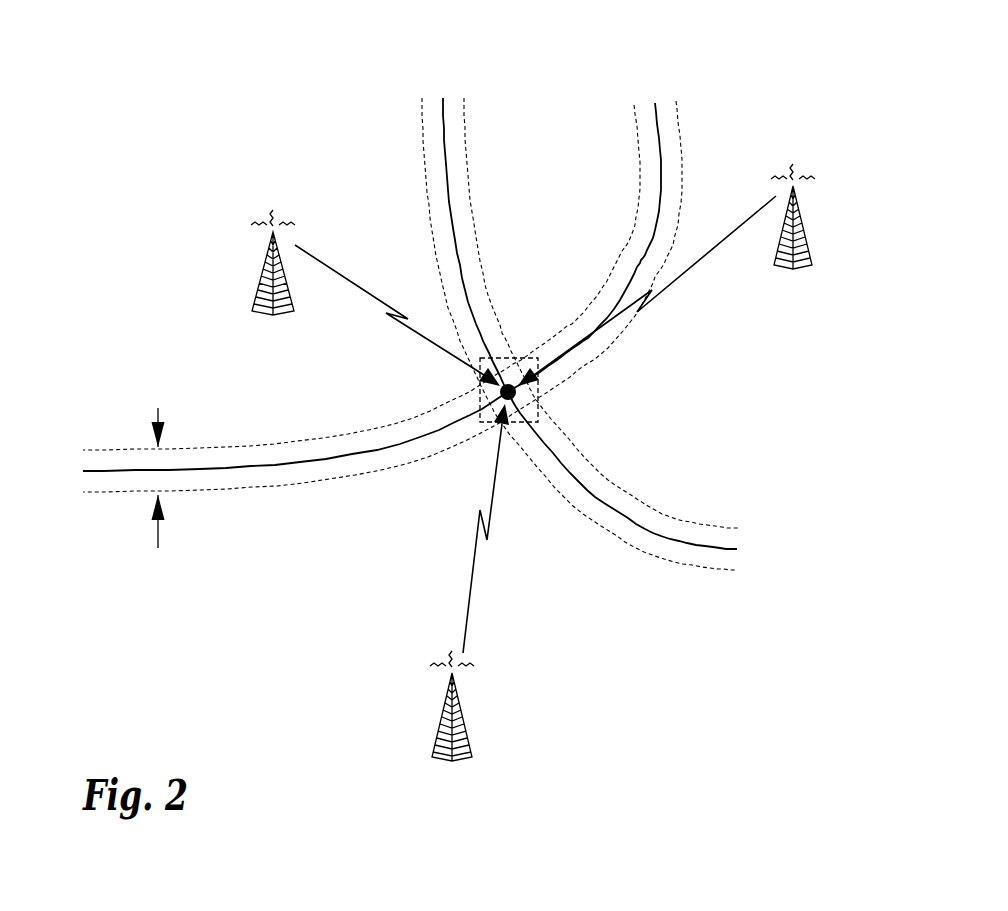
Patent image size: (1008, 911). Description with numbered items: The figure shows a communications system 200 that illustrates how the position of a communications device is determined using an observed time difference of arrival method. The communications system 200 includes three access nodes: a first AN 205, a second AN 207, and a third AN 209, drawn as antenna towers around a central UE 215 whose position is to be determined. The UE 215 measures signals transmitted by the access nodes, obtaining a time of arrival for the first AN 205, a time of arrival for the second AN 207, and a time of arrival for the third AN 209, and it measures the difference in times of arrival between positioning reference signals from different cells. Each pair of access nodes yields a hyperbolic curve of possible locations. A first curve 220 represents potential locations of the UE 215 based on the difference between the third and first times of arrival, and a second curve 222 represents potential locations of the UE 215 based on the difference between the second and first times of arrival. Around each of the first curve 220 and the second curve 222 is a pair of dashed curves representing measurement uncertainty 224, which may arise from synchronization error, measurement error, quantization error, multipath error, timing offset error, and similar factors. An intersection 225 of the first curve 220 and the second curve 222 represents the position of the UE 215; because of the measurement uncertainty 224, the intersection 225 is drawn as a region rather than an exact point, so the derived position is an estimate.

The communications system 200 is at (772, 50).
The first AN (AN1) 205 is at (262, 272).
The second AN (AN2) 207 is at (812, 225).
The third AN (AN3) 209 is at (465, 722).
The UE 215 is at (514, 357).
The first curve 220 is at (126, 470).
The second curve 222 is at (572, 477).
The measurement uncertainty 224 is at (262, 586).
The intersection 225 is at (537, 412).